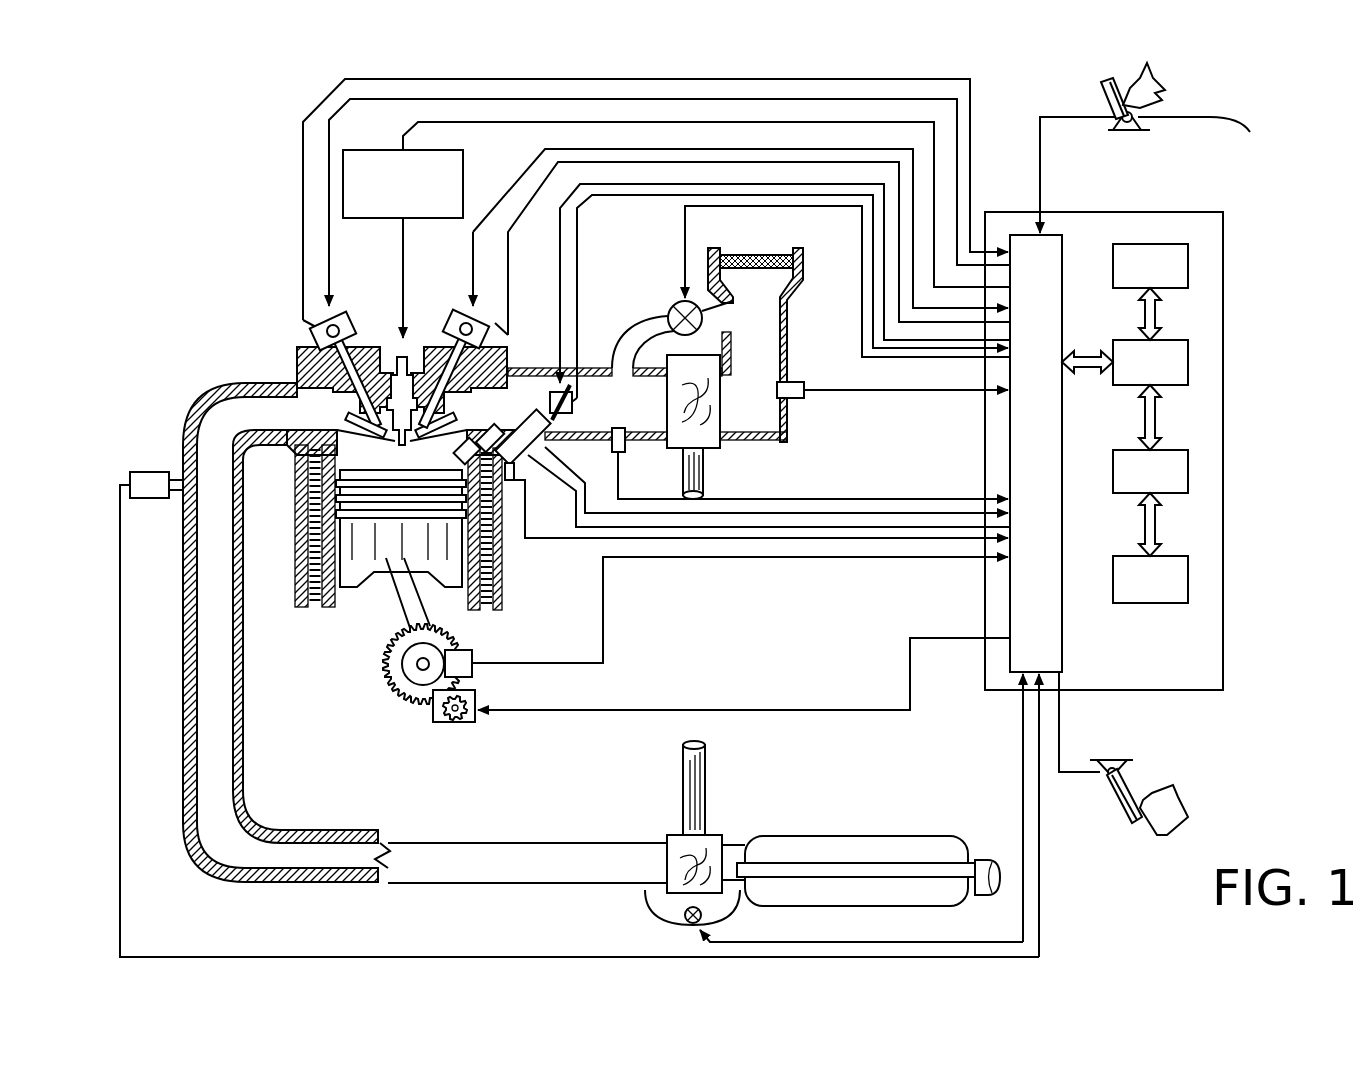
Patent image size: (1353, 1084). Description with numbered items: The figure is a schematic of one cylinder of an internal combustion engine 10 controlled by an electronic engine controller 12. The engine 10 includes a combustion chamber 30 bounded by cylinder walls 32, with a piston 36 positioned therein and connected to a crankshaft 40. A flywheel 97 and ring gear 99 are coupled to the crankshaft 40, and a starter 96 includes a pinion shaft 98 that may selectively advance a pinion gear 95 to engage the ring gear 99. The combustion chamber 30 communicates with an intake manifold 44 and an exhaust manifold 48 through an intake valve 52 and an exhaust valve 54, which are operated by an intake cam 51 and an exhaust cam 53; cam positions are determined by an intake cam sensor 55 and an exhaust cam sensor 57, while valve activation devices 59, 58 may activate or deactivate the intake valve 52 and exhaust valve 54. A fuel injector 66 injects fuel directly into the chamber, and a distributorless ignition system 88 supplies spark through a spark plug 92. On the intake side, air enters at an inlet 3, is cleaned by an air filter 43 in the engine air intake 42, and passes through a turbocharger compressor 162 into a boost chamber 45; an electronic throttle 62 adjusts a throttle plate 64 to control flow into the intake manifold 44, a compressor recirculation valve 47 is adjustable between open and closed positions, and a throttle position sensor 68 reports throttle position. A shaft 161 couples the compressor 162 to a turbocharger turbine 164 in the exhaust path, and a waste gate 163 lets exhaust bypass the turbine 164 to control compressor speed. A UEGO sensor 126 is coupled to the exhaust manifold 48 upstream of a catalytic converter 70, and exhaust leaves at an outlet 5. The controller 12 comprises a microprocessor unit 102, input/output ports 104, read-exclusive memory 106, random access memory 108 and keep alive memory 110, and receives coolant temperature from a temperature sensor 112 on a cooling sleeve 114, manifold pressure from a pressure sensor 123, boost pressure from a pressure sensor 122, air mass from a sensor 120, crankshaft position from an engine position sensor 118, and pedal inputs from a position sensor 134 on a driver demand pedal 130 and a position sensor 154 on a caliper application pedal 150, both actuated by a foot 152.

The inlet 3 is at (770, 248).
The outlet 5 is at (988, 850).
The internal combustion engine 10 is at (230, 298).
The electronic engine controller 12 is at (1228, 212).
The combustion chamber 30 is at (400, 450).
The cylinder walls 32 is at (343, 600).
The piston 36 is at (383, 555).
The crankshaft 40 is at (407, 697).
The engine air intake 42 is at (657, 263).
The air filter 43 is at (745, 268).
The intake manifold 44 is at (647, 386).
The boost chamber 45 is at (627, 405).
The compressor recirculation valve 47 is at (678, 305).
The exhaust manifold 48 is at (425, 633).
The intake cam 51 is at (458, 312).
The intake valve 52 is at (447, 415).
The exhaust cam 53 is at (338, 313).
The exhaust valve 54 is at (308, 382).
The intake cam sensor 55 is at (484, 318).
The exhaust cam sensor 57 is at (316, 333).
The valve activation device 58 is at (347, 340).
The valve activation device 59 is at (446, 342).
The electronic throttle 62 is at (573, 400).
The throttle plate 64 is at (568, 415).
The fuel injector 66 is at (510, 475).
The throttle position sensor 68 is at (585, 368).
The catalytic converter 70 is at (790, 835).
The distributorless ignition system 88 is at (358, 150).
The spark plug 92 is at (405, 336).
The pinion gear 95 is at (463, 722).
The starter 96 is at (470, 723).
The flywheel 97 is at (392, 675).
The pinion shaft 98 is at (452, 718).
The ring gear 99 is at (418, 703).
The microprocessor unit 102 is at (1188, 352).
The input/output ports 104 is at (1062, 255).
The read-exclusive memory 106 is at (1188, 265).
The random access memory 108 is at (1188, 465).
The keep alive memory 110 is at (1188, 575).
The temperature sensor 112 is at (512, 483).
The cooling sleeve 114 is at (500, 565).
The engine position sensor 118 is at (472, 652).
The air mass sensor 120 is at (803, 385).
The pressure sensor 122 is at (625, 452).
The pressure sensor 123 is at (548, 445).
The Universal Exhaust Gas Oxygen (UEGO) sensor 126 is at (130, 474).
The driver demand pedal 130 is at (1105, 93).
The position sensor 134 is at (1215, 135).
The caliper application pedal 150 is at (1136, 822).
The foot 152 is at (1162, 88).
The position sensor 154 is at (1098, 766).
The shaft 161 is at (706, 795).
The turbocharger compressor 162 is at (720, 425).
The waste gate 163 is at (688, 923).
The turbocharger turbine 164 is at (668, 835).